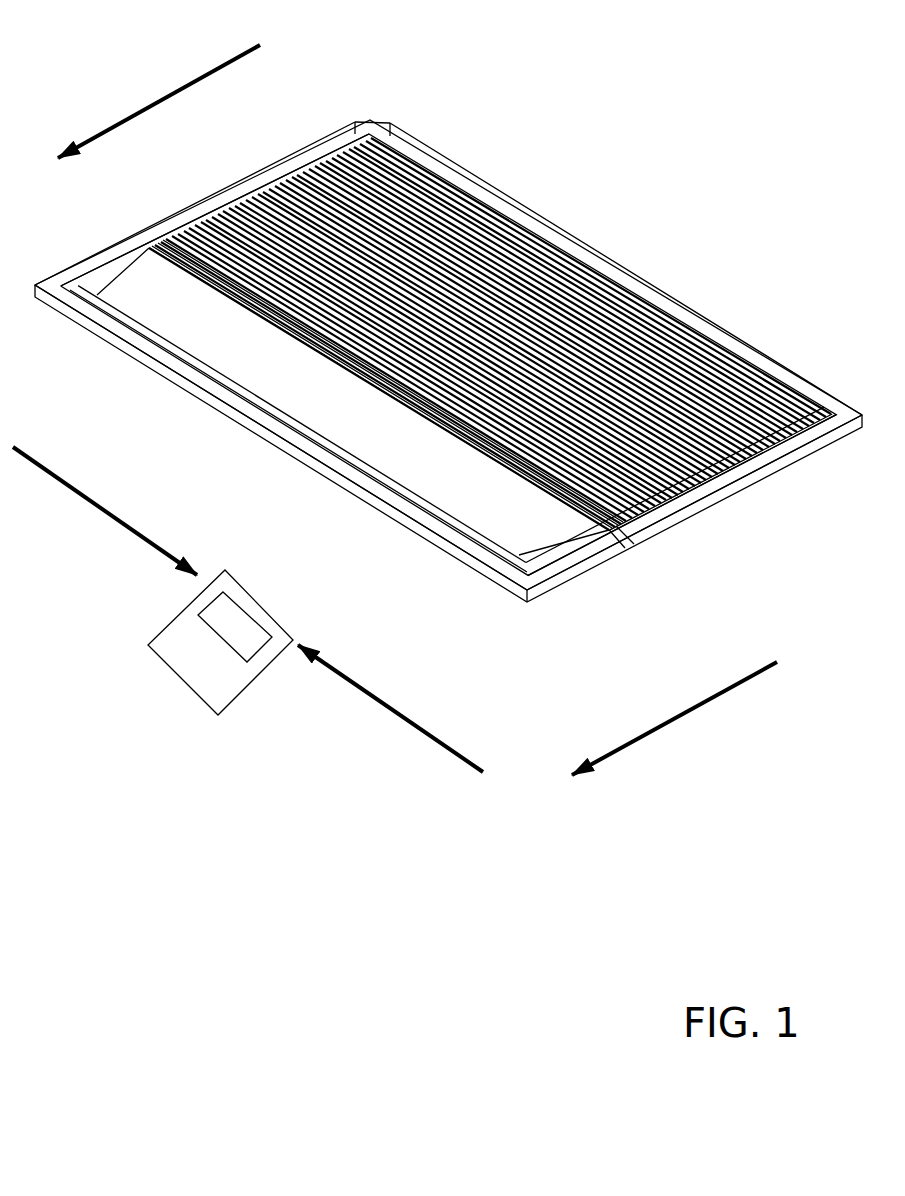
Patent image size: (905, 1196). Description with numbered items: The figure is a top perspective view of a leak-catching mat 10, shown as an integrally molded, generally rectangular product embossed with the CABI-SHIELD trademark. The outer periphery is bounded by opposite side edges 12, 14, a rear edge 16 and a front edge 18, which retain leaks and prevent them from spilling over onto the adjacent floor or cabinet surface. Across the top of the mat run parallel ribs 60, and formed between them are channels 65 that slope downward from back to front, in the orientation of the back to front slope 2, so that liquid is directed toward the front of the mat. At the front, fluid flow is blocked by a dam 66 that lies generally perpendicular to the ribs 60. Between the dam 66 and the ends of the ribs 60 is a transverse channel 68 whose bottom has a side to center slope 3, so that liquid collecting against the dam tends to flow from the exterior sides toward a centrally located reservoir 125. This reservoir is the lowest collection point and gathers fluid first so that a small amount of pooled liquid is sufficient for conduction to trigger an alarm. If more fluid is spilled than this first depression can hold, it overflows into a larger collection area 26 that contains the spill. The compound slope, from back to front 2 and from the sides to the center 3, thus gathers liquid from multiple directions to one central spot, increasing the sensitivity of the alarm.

The back to front slope 2 is at (417, 421).
The side to center slope 3 is at (248, 609).
The mat 10 is at (448, 550).
The side edge 12 is at (213, 192).
The side edge 14 is at (573, 573).
The rear edge 16 is at (626, 278).
The front edge 18 is at (343, 473).
The collection area 26 is at (268, 402).
The ribs 60 is at (182, 233).
The channels 65 is at (127, 255).
The dam 66 is at (620, 547).
The channel 68 is at (663, 525).
The collection point 125 is at (202, 407).